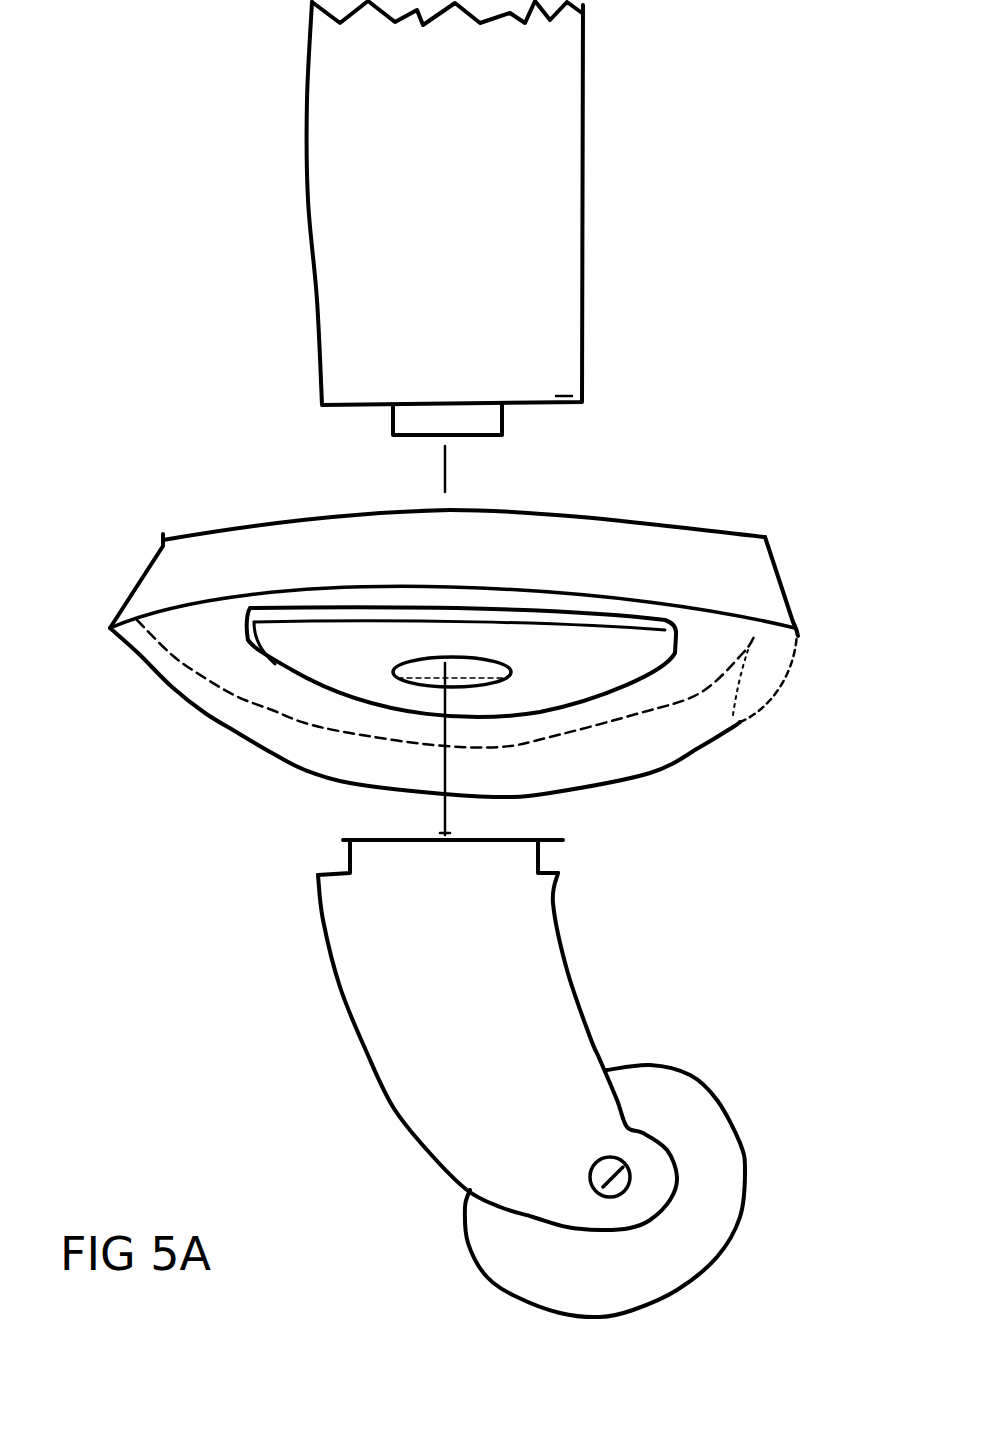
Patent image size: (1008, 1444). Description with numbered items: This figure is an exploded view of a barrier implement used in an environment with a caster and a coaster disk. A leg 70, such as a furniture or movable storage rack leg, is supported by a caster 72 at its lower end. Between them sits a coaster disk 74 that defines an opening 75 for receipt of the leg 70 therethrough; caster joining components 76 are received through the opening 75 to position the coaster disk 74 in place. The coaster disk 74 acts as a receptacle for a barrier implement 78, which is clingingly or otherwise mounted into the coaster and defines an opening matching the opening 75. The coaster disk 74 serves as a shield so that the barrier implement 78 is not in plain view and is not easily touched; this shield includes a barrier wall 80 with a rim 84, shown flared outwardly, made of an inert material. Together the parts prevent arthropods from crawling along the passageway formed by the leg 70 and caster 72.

The leg 70 is at (573, 282).
The caster joining components 76 is at (502, 432).
The coaster disk 74 is at (763, 583).
The opening 75 is at (477, 667).
The barrier implement 78 is at (300, 652).
The rim 84 is at (794, 620).
The barrier wall 80 is at (740, 720).
The caster 72 is at (573, 1000).